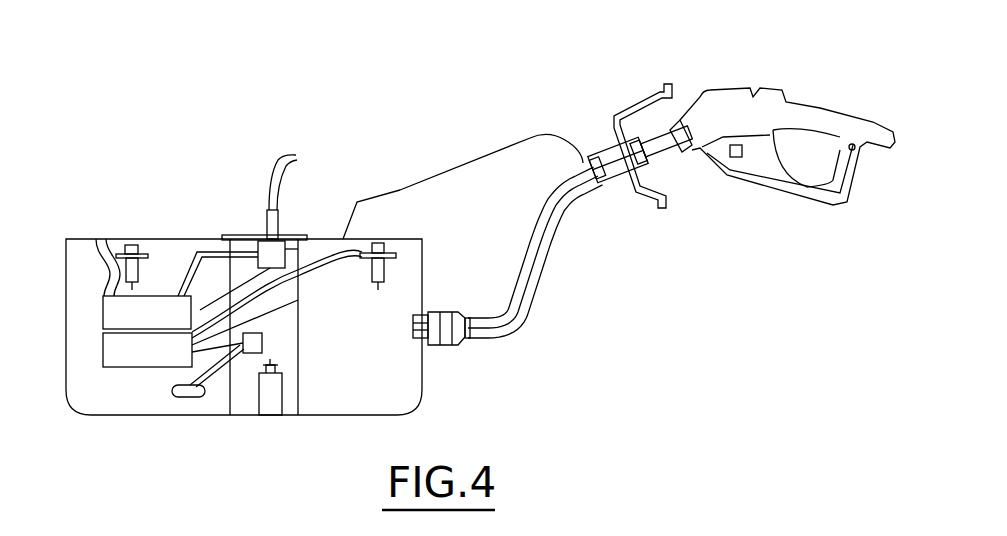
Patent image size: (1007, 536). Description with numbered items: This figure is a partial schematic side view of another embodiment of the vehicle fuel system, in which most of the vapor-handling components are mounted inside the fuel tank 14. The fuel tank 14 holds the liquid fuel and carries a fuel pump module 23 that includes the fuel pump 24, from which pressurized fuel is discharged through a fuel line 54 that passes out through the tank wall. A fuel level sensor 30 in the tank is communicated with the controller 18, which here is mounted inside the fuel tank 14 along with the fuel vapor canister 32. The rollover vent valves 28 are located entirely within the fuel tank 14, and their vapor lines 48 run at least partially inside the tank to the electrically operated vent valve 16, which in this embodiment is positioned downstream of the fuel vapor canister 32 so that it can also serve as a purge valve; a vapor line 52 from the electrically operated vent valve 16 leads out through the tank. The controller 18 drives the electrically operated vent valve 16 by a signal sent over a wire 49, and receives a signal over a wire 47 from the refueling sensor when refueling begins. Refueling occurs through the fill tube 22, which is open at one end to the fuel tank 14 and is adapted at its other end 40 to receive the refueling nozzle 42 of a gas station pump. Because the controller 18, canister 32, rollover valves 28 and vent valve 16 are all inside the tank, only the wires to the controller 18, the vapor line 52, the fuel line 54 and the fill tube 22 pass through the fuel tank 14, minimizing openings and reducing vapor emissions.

The fuel tank 14 is at (415, 403).
The electrically operated vent valve 16 is at (284, 236).
The controller 18 is at (111, 369).
The fill tube 22 is at (551, 260).
The fuel pump module 23 is at (300, 338).
The fuel pump 24 is at (258, 394).
The rollover vent valve 28 is at (154, 251).
The fuel level sensor 30 is at (181, 398).
The fuel vapor canister 32 is at (99, 323).
The end of the fill tube 40 is at (606, 141).
The refueling nozzle 42 is at (733, 86).
The wire 47 is at (555, 133).
The vapor lines 48 is at (100, 290).
The wire 49 is at (250, 284).
The vapor line 52 is at (268, 185).
The fuel line 54 is at (277, 367).